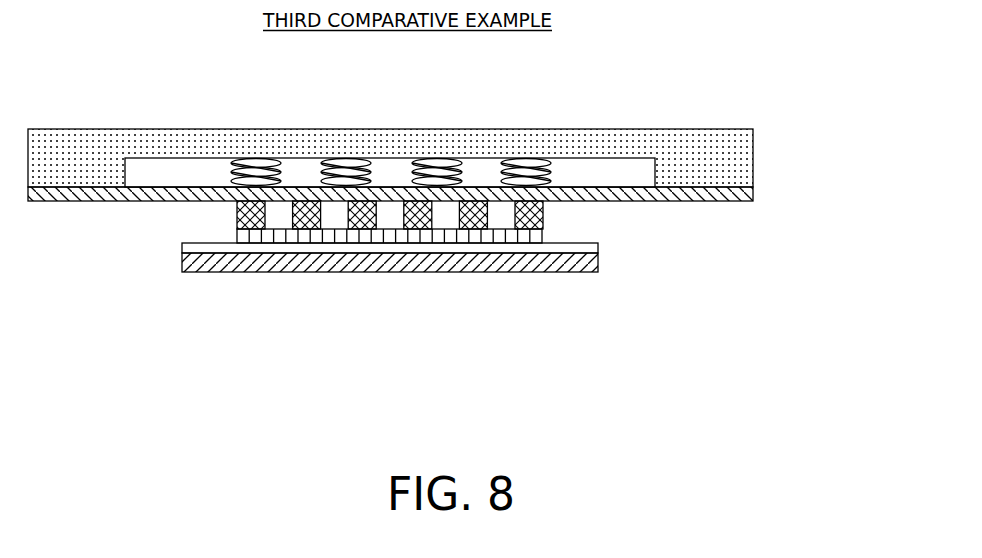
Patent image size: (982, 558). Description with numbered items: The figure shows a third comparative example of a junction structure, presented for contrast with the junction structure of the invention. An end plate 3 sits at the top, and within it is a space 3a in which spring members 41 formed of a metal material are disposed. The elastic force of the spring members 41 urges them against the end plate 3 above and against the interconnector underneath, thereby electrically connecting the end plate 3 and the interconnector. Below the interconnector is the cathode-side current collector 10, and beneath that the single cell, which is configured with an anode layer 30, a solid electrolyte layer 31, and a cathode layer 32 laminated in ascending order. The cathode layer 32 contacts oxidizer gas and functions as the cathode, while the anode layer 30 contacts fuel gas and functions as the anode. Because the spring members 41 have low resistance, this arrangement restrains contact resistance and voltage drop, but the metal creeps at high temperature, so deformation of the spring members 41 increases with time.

The end plate 3 is at (423, 125).
The space 3a is at (605, 172).
The spring members 41 is at (529, 172).
The cathode-side current collector 10 is at (237, 208).
The cathode layer 32 is at (502, 233).
The solid electrolyte layer 31 is at (552, 246).
The anode layer 30 is at (582, 262).